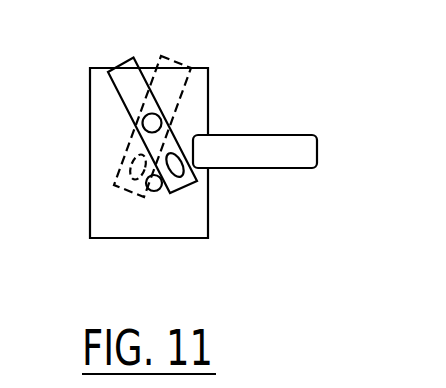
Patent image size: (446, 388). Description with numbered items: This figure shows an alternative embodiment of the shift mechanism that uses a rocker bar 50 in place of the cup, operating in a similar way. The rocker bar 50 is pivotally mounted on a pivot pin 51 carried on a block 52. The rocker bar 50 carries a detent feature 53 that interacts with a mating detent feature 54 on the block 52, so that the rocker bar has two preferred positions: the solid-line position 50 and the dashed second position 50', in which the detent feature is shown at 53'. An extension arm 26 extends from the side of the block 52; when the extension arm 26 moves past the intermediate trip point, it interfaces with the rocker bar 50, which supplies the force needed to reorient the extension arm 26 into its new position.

The extension arm 26 is at (288, 135).
The rocker bar 50 is at (148, 98).
The rocker bar (second position) 50' is at (117, 123).
The pivot pin 51 is at (162, 123).
The block 52 is at (100, 147).
The detent feature 53 is at (206, 200).
The detent feature (second position) 53' is at (83, 174).
The mating detent feature 54 is at (155, 191).